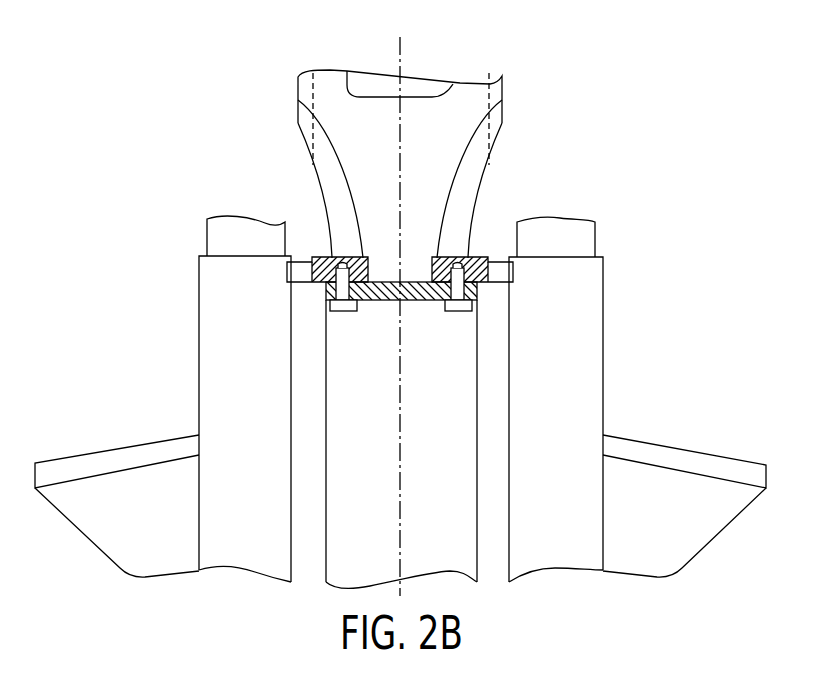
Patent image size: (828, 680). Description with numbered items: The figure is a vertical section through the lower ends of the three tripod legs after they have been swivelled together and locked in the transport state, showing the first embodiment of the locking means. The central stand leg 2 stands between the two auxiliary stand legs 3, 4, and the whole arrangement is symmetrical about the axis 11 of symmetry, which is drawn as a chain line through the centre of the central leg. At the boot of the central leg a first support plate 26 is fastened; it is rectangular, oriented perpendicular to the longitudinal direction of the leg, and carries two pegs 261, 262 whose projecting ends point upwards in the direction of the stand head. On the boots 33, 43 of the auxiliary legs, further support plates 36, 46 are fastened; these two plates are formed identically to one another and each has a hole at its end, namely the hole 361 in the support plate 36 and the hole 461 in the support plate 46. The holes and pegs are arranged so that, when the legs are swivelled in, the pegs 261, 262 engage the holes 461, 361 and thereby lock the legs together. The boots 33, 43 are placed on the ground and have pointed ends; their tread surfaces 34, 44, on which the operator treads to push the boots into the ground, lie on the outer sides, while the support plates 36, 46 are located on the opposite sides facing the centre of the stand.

The axis of symmetry 11 is at (418, 42).
The stand leg 2 is at (386, 438).
The stand leg 3 is at (555, 393).
The stand leg 4 is at (250, 393).
The first support plate 26 is at (393, 300).
The peg 261 is at (342, 293).
The peg 262 is at (460, 292).
The support plate 36 is at (505, 270).
The hole 361 is at (456, 257).
The support plate 46 is at (307, 270).
The hole 461 is at (346, 257).
The boot 43 is at (117, 506).
The tread surface 44 is at (167, 527).
The boot 33 is at (684, 506).
The tread surface 34 is at (678, 527).